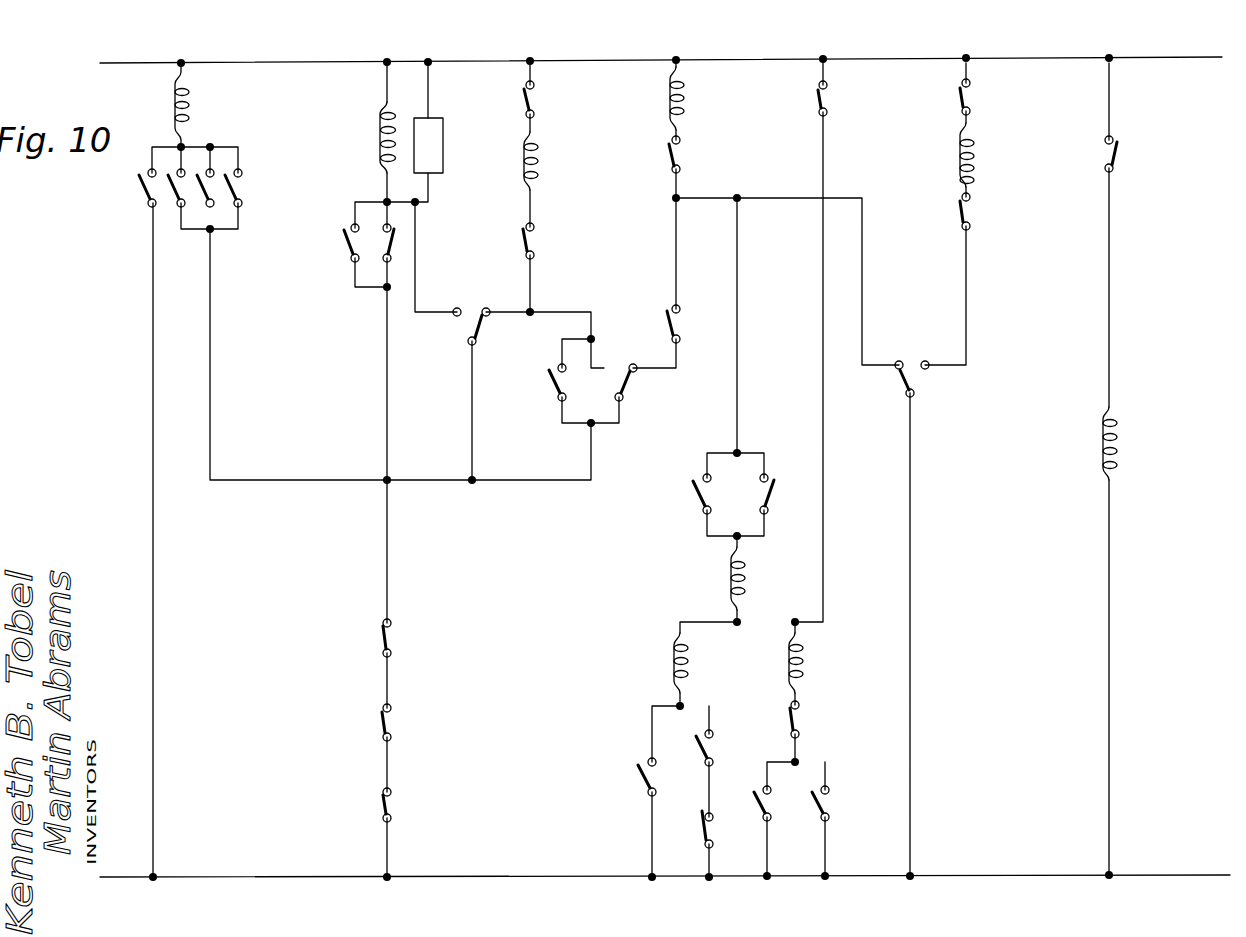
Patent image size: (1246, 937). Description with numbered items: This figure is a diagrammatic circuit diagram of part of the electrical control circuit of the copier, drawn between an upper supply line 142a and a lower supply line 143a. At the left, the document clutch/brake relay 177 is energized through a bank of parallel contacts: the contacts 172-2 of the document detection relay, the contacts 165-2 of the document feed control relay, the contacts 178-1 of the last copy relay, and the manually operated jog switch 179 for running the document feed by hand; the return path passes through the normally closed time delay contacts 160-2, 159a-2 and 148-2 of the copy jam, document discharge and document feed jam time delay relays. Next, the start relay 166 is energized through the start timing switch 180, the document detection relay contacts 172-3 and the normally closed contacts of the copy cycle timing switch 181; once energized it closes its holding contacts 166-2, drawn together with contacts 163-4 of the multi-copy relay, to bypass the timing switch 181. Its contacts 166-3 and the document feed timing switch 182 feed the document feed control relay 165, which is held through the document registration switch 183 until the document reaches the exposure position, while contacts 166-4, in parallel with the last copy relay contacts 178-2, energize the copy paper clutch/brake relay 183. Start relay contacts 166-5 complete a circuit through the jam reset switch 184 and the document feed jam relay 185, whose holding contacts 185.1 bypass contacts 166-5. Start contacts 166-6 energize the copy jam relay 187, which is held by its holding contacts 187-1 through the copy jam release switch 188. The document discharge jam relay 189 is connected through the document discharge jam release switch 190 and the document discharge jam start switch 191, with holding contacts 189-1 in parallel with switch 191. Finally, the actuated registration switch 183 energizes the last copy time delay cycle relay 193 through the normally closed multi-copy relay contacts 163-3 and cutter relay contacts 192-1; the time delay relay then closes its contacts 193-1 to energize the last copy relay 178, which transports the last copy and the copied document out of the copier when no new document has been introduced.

The positive supply conductor 142a is at (118, 63).
The negative supply conductor 143a is at (184, 877).
The document clutch/brake relay 177 is at (190, 103).
The jog switch 179 is at (140, 199).
The document detection relay contacts 172-2 is at (175, 211).
The document feed control relay contacts 165-2 is at (224, 212).
The last copy relay contacts 178-1 is at (242, 192).
The copy paper clutch/brake relay 183 is at (378, 124).
The start relay contacts 166-4 is at (346, 253).
The last copy relay contacts 178-2 is at (393, 240).
The start timing switch 180 is at (524, 108).
The start relay 166 is at (521, 176).
The document detection relay contacts 172-3 is at (533, 242).
The copy cycle timing switch 181 is at (469, 329).
The start relay holding contacts 166-2 is at (554, 386).
The relay contact 163-4 is at (627, 384).
The start relay contacts 166-3 is at (674, 323).
The document feed control relay 165 is at (686, 100).
The document feed timing switch 182 is at (680, 156).
The jam reset switch 184 is at (828, 97).
The multi-copy relay contacts 163-3 is at (970, 98).
The last copy time delay cycle relay 193 is at (974, 158).
The cutter relay contacts 192-1 is at (970, 212).
The last copy time delay cycle relay contacts 193-1 is at (1116, 152).
The last copy relay 178 is at (1120, 450).
The start relay contacts 166-5 is at (697, 495).
The document feed jam relay holding contacts 185.1 is at (772, 494).
The document feed jam relay 185 is at (745, 580).
The copy jam relay 187 is at (672, 665).
The document discharge jam relay 189 is at (804, 665).
The document discharge jam release switch 190 is at (798, 718).
The copy jam relay holding contacts 187-1 is at (710, 748).
The copy jam release switch 188 is at (704, 826).
The start relay contacts 166-6 is at (642, 780).
The document discharge jam start switch 191 is at (770, 807).
The document discharge jam relay holding contacts 189-1 is at (829, 806).
The copy jam time delay relay contacts 160-2 is at (354, 638).
The document discharge time delay relay contacts 159a-2 is at (380, 726).
The document feed jam time delay relay contacts 148-2 is at (381, 806).